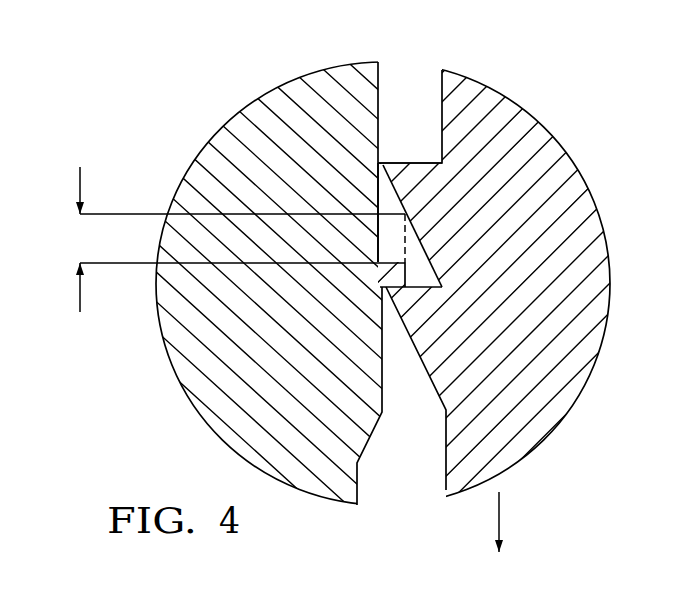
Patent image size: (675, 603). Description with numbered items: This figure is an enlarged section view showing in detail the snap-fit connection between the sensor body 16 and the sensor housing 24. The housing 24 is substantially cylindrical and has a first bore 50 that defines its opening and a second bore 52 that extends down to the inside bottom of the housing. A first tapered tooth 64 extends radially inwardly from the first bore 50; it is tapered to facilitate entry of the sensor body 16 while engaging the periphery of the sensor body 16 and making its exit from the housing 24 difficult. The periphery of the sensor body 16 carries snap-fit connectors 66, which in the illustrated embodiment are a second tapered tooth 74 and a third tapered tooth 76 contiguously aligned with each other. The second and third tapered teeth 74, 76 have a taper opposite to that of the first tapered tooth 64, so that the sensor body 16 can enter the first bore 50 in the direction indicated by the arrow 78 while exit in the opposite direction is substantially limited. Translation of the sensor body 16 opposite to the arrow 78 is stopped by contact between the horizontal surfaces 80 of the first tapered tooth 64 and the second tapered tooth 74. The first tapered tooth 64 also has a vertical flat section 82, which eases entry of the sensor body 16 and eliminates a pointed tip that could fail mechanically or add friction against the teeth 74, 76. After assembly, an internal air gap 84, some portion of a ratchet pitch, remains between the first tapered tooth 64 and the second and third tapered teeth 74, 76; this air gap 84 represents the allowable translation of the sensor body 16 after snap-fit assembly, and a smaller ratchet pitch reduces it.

The sensor body 16 is at (512, 128).
The sensor housing 24 is at (180, 358).
The first bore 50 is at (383, 390).
The second bore 52 is at (400, 81).
The first tapered tooth 64 is at (410, 268).
The snap-fit connectors 66 is at (415, 163).
The second tapered tooth 74 is at (408, 332).
The third tapered tooth 76 is at (380, 202).
The arrow 78 is at (500, 513).
The horizontal surfaces 80 is at (383, 299).
The vertical flat section 82 is at (408, 262).
The internal air gap 84 is at (80, 185).